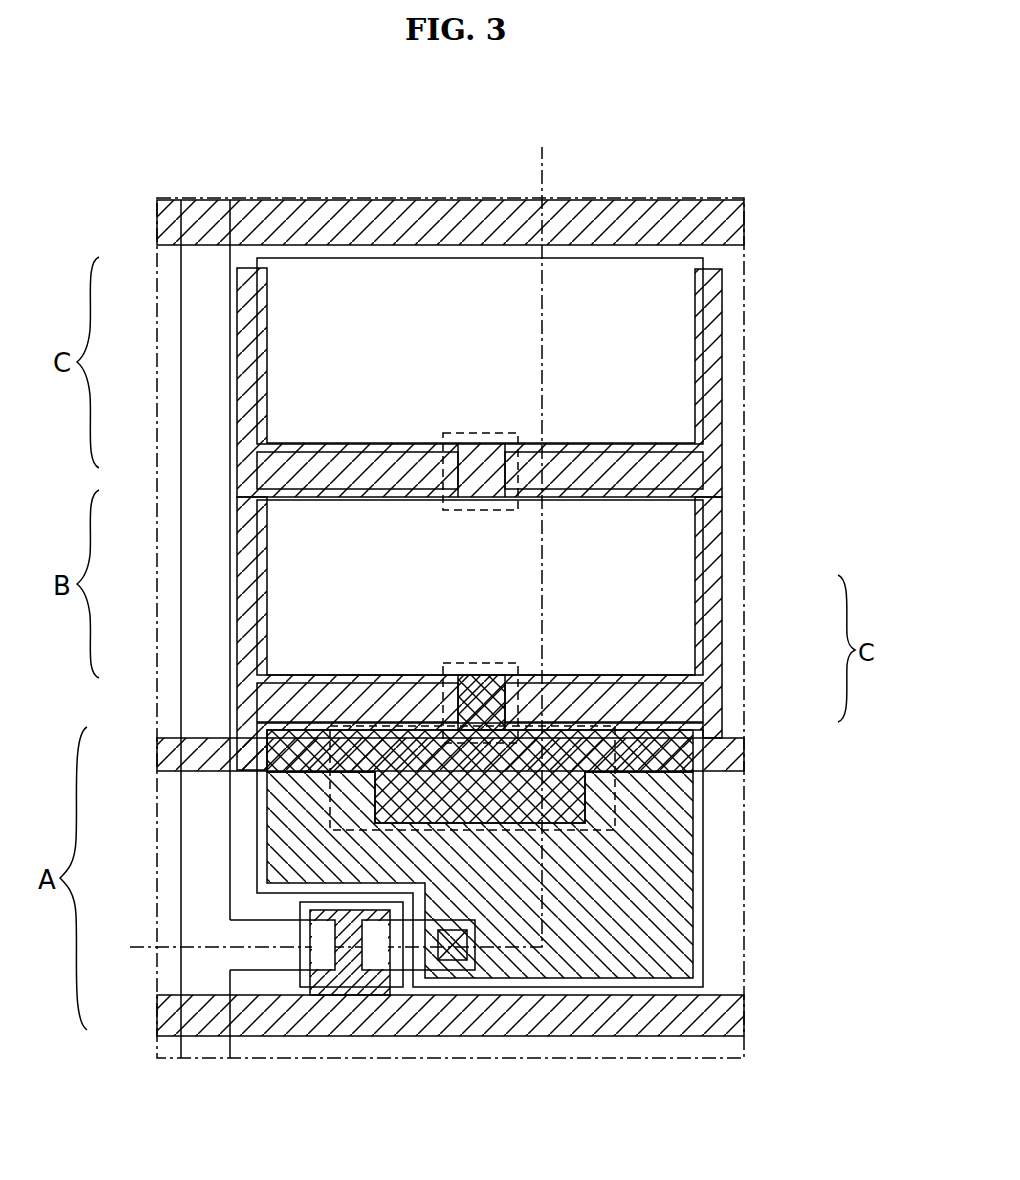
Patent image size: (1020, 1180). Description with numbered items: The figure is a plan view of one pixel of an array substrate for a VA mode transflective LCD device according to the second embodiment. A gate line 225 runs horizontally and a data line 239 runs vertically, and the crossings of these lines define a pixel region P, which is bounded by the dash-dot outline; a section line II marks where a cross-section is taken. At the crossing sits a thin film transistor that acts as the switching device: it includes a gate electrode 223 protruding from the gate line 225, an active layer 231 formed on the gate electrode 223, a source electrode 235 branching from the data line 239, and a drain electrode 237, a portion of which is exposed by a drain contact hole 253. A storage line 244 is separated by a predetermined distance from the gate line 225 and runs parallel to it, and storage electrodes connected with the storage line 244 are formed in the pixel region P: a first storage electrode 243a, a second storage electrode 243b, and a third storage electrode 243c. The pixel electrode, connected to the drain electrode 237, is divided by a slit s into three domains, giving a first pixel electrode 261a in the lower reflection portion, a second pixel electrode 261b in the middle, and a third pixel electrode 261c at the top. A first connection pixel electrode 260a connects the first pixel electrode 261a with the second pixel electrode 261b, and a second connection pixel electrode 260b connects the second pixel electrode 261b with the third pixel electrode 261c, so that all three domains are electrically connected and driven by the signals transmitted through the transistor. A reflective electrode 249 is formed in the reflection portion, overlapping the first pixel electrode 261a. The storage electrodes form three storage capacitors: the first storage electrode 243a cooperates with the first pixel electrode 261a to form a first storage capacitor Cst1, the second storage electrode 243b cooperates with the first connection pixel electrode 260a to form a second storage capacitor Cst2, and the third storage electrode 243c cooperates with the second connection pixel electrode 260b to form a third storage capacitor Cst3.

The data line 239 is at (213, 265).
The pixel region P is at (440, 198).
The section line II-II' II is at (605, 160).
The third pixel electrode 261c is at (660, 262).
The second pixel electrode 261b is at (706, 523).
The first pixel electrode 261a is at (693, 877).
The second connection pixel electrode 260b is at (703, 478).
The first connection pixel electrode 260a is at (462, 690).
The third storage electrode 243c is at (480, 435).
The second storage electrode 243b is at (477, 685).
The first storage electrode 243a is at (575, 803).
The storage line 244 is at (740, 752).
The reflective electrode 249 is at (693, 938).
The gate line 225 is at (598, 1036).
The gate electrode 223 is at (323, 985).
The active layer 231 is at (357, 988).
The source electrode 235 is at (257, 965).
The drain electrode 237 is at (472, 963).
The drain contact hole 253 is at (450, 960).
The first storage capacitor Cst1 is at (725, 720).
The second storage capacitor Cst2 is at (517, 638).
The third storage capacitor Cst3 is at (480, 510).
The slit s is at (288, 472).